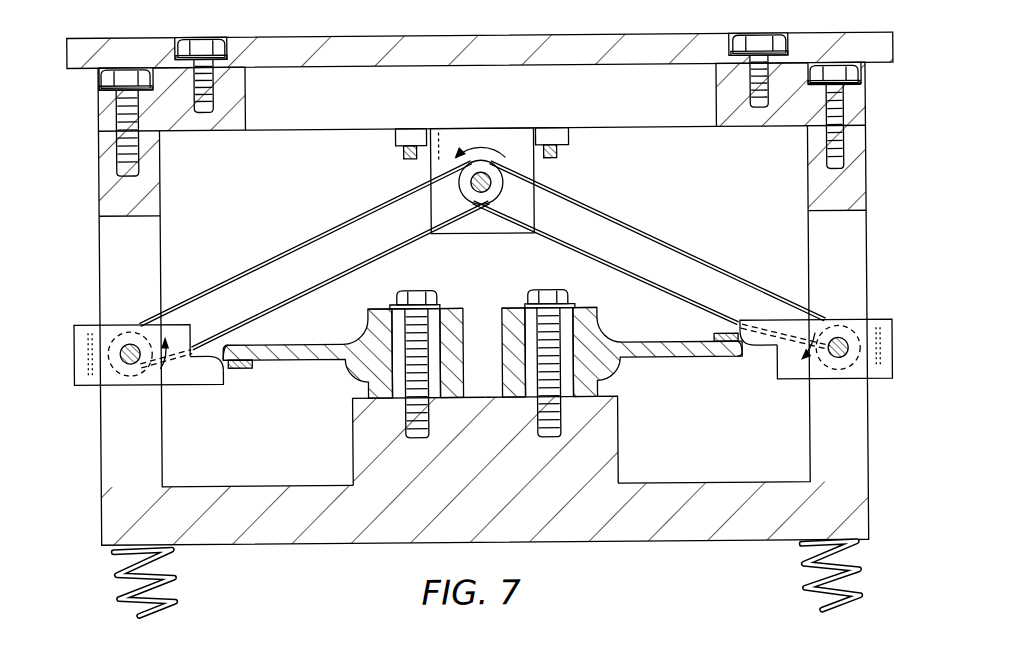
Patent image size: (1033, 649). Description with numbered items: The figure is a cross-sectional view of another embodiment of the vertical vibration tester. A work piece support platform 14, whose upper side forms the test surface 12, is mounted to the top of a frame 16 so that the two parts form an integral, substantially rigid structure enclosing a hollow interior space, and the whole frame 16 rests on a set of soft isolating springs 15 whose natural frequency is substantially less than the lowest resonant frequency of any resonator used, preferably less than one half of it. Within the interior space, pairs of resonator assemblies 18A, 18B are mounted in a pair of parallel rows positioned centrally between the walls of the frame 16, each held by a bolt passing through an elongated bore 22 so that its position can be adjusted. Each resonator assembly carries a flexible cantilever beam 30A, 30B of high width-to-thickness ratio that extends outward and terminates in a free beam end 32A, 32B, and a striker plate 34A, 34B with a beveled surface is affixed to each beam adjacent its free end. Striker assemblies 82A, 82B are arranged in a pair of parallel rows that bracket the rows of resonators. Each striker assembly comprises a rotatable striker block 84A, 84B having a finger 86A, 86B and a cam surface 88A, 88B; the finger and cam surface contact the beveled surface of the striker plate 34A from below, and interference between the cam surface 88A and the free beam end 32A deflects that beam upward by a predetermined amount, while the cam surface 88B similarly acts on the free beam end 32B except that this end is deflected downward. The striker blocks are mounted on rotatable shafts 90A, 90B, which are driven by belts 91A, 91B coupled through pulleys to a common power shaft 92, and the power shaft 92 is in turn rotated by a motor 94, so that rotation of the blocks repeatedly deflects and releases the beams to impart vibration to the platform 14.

The test surface 12 is at (384, 33).
The work piece support platform 14 is at (262, 45).
The isolating springs 15 is at (175, 580).
The frame 16 is at (870, 453).
The resonator assembly 18A is at (326, 380).
The resonator assembly 18B is at (658, 370).
The bore 22 is at (436, 332).
The cantilever beam 30A is at (317, 348).
The cantilever beam 30B is at (630, 348).
The free beam end 32A is at (227, 344).
The free beam end 32B is at (742, 353).
The striker plate 34A is at (247, 367).
The striker plate 34B is at (737, 338).
The striker assembly 82A is at (180, 399).
The striker assembly 82B is at (787, 390).
The rotatable striker block 84A is at (79, 321).
The rotatable striker block 84B is at (873, 321).
The finger 86A is at (219, 384).
The finger 86B is at (756, 340).
The cam surface 88A is at (230, 374).
The cam surface 88B is at (739, 331).
The rotatable shaft 90A is at (122, 354).
The rotatable shaft 90B is at (849, 350).
The belt 91A is at (344, 224).
The belt 91B is at (600, 214).
The power shaft 92 is at (491, 188).
The motor 94 is at (432, 171).